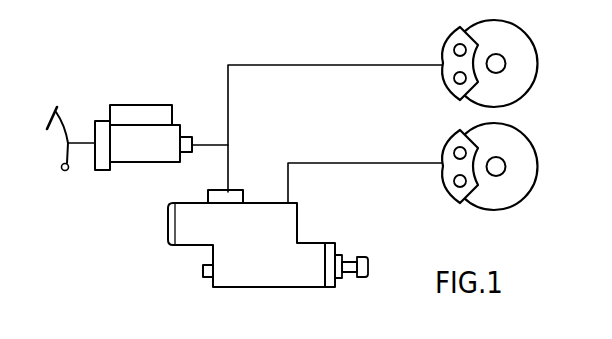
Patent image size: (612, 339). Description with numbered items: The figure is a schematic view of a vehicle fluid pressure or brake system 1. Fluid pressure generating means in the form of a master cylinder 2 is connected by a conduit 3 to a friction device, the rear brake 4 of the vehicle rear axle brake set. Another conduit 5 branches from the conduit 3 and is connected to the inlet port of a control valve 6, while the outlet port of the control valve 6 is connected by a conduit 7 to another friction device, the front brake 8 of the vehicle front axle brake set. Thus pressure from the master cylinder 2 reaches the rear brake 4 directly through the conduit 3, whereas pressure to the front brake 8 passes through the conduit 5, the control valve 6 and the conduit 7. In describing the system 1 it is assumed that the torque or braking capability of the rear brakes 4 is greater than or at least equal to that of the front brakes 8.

The fluid pressure system 1 is at (104, 86).
The master cylinder 2 is at (138, 110).
The conduit 3 is at (228, 113).
The rear brake 4 is at (523, 63).
The conduit 5 is at (228, 175).
The control valve 6 is at (257, 236).
The conduit 7 is at (360, 166).
The front brake 8 is at (523, 167).